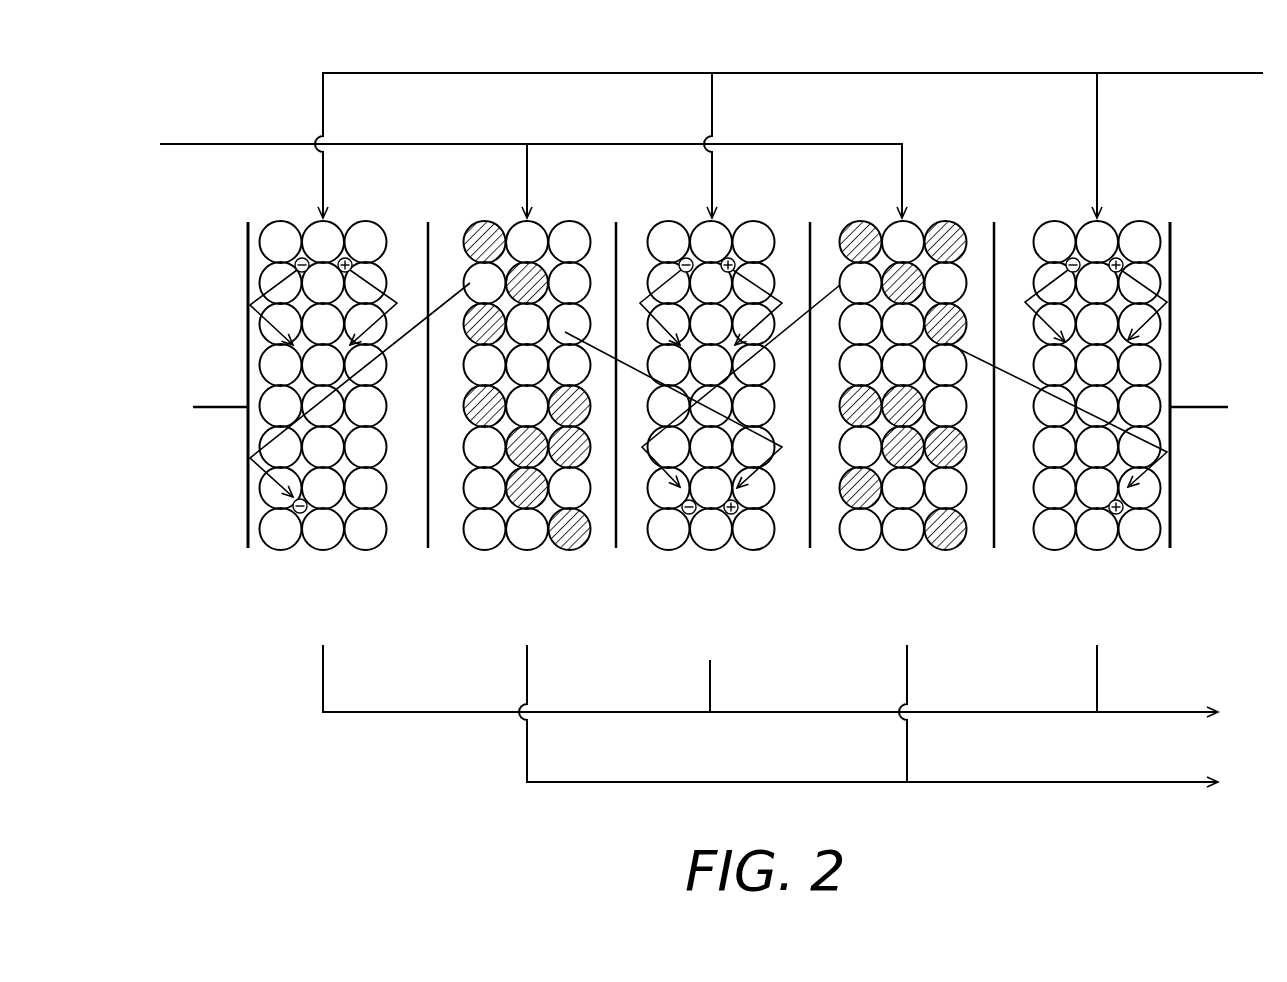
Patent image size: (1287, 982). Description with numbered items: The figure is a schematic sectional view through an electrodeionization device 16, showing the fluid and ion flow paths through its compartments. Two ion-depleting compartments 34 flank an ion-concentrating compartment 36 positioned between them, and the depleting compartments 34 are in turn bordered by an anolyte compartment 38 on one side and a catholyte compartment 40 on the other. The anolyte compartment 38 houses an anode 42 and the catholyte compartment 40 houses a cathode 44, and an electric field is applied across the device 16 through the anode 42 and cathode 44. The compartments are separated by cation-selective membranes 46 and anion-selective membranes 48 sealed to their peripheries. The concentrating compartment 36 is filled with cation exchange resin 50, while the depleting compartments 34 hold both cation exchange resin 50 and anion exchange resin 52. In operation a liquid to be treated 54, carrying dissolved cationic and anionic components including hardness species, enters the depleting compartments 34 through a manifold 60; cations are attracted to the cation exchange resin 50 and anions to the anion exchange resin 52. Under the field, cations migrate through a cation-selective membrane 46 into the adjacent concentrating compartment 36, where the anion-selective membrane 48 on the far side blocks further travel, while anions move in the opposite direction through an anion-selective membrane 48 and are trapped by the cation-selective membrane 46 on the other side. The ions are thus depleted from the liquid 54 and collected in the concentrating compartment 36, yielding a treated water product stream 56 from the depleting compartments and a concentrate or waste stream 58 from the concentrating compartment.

The electrodeionization device 16 is at (192, 75).
The ion-depleting compartment 34 is at (553, 212).
The ion-concentrating compartment 36 is at (733, 215).
The anolyte compartment 38 is at (340, 216).
The catholyte compartment 40 is at (1125, 212).
The anode 42 is at (222, 410).
The cathode 44 is at (1228, 407).
The cation-selective membrane 46 is at (613, 542).
The anion-selective membrane 48 is at (427, 543).
The cation exchange resin 50 is at (480, 550).
The anion exchange resin 52 is at (487, 226).
The liquid to be treated 54 is at (352, 145).
The treated water product stream 56 is at (672, 782).
The concentrate or waste stream 58 is at (800, 712).
The manifold 60 is at (855, 73).